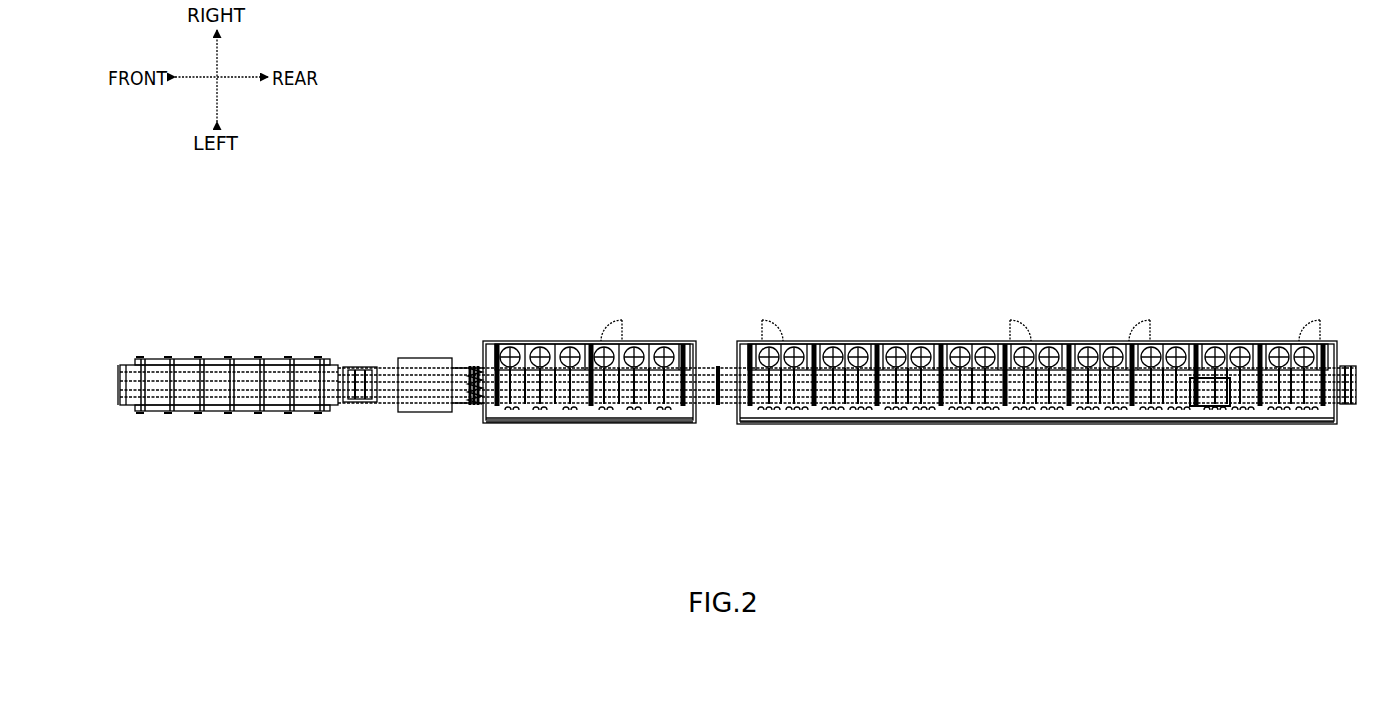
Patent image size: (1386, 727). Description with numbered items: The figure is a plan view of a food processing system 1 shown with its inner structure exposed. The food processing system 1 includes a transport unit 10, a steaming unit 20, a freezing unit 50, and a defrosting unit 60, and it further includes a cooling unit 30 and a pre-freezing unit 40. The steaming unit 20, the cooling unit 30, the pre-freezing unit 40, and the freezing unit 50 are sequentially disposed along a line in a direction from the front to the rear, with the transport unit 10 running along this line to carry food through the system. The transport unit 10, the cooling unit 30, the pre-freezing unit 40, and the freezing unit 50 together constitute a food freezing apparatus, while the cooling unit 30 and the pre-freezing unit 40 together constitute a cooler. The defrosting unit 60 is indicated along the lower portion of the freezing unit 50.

The food processing system 1 is at (780, 492).
The transport unit 10 is at (392, 357).
The steaming unit 20 is at (278, 334).
The cooling unit 30 is at (428, 345).
The pre-freezing unit 40 is at (654, 333).
The freezing unit 50 is at (1184, 332).
The defrosting unit 60 is at (1154, 424).